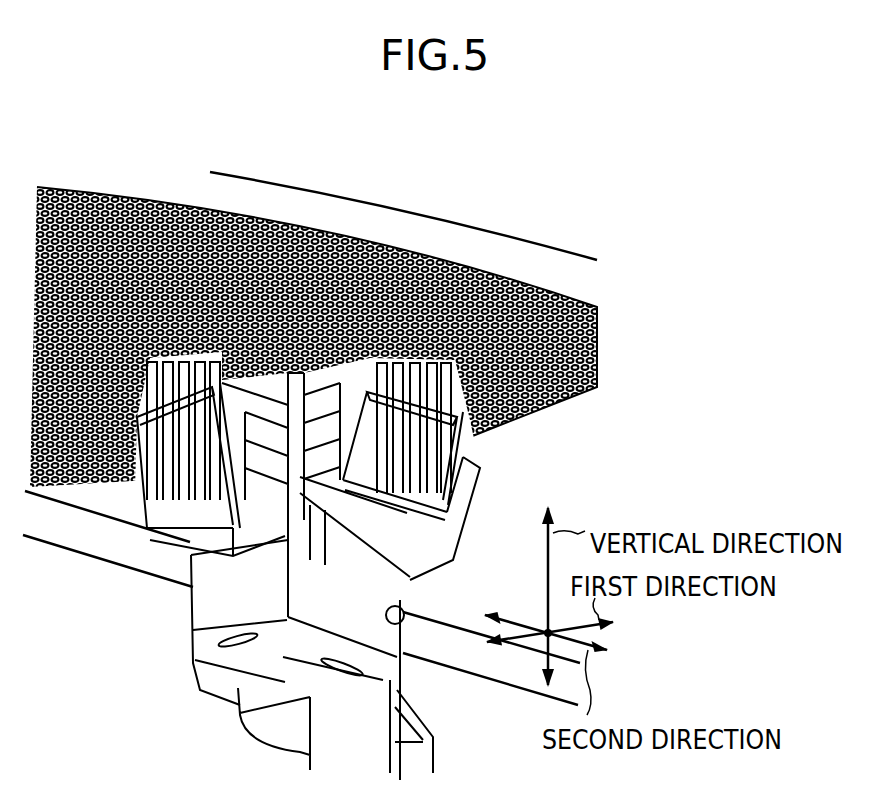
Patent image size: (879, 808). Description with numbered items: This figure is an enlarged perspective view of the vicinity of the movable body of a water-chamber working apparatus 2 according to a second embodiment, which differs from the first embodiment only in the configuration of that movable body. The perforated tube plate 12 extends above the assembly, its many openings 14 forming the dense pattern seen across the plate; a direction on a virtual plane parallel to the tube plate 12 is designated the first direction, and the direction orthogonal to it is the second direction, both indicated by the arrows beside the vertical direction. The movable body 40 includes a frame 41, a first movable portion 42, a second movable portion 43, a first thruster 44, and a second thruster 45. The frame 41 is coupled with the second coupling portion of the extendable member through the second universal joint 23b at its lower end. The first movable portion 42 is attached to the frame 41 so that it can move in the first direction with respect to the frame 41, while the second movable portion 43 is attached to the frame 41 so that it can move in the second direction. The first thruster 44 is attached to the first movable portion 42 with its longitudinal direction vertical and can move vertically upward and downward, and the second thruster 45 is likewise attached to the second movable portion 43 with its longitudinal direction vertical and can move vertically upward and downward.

The water-chamber working apparatus 2 is at (574, 208).
The tube plate 12 is at (85, 513).
The mesh openings 14 is at (505, 417).
The movable body 40 is at (303, 566).
The frame 41 is at (192, 617).
The first movable portion 42 is at (470, 523).
The second movable portion 43 is at (177, 567).
The first thruster 44 is at (447, 525).
The second thruster 45 is at (220, 488).
The second universal joint 23b is at (442, 743).